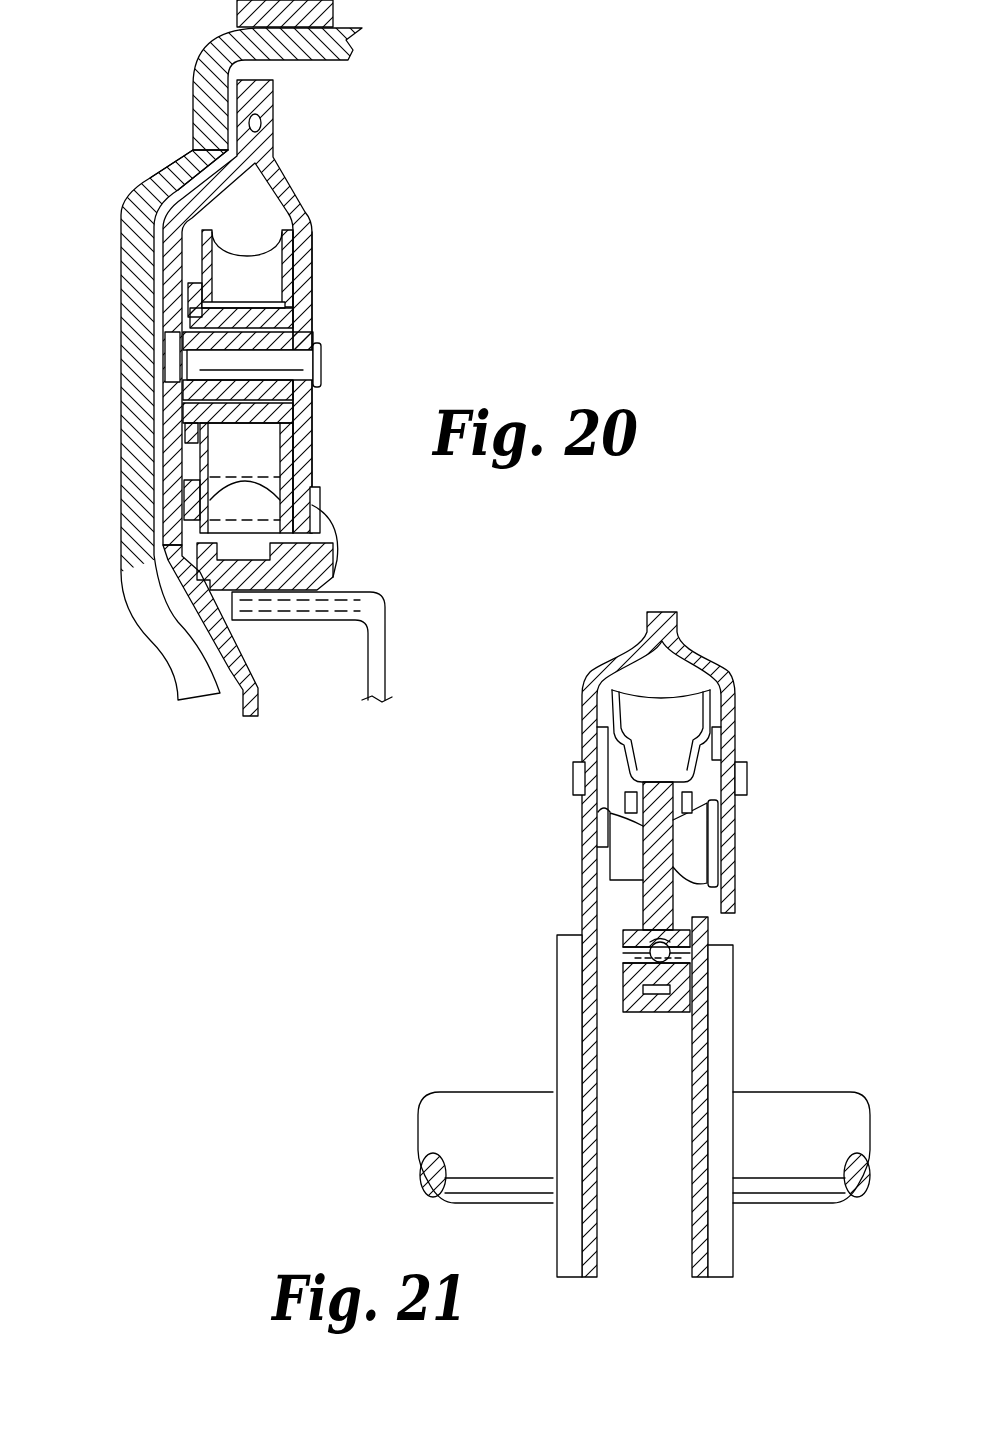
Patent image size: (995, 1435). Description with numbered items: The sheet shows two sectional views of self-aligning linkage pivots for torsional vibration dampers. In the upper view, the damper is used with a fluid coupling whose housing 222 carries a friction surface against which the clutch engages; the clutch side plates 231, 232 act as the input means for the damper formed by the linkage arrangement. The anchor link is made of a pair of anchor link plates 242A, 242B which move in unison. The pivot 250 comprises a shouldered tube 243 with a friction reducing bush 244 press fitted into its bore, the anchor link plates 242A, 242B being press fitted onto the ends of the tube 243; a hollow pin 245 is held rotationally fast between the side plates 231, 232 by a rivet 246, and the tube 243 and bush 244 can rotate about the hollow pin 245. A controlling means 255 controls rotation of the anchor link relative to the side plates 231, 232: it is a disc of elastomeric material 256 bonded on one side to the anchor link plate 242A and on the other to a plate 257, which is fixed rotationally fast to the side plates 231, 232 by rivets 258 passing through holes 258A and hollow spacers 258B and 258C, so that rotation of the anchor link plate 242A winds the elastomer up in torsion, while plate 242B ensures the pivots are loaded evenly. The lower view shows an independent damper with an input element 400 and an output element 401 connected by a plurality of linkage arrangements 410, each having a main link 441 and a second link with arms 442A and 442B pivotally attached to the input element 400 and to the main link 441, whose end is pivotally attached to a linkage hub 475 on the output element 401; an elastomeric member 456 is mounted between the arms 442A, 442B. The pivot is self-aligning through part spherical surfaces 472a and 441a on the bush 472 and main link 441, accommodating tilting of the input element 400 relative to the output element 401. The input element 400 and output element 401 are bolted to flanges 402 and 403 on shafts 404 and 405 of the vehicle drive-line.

In FIG. 20, the housing 222 is at (330, 45).
In FIG. 20, the side plate 231 is at (190, 152).
In FIG. 20, the side plate 232 is at (262, 147).
In FIG. 20, the disc of elastomeric material 256 is at (230, 242).
In FIG. 20, the plate 257 is at (185, 233).
In FIG. 20, the anchor link plate 242A is at (312, 222).
In FIG. 20, the anchor link plate 242B is at (195, 297).
In FIG. 20, the controlling means 255 is at (296, 252).
In FIG. 20, the shouldered tube 243 is at (290, 305).
In FIG. 20, the friction reducing bush 244 is at (272, 320).
In FIG. 20, the pivot 250 is at (166, 322).
In FIG. 20, the hollow pin 245 is at (290, 358).
In FIG. 20, the rivet 246 is at (283, 352).
In FIG. 20, the rivet 258 is at (290, 503).
In FIG. 20, the hole 258A is at (200, 498).
In FIG. 20, the hollow spacer 258B is at (178, 565).
In FIG. 20, the hollow spacer 258C is at (273, 542).
In FIG. 21, the input element 400 is at (590, 860).
In FIG. 21, the arm 442A is at (715, 755).
In FIG. 21, the arm 442B is at (607, 782).
In FIG. 21, the elastomeric member 456 is at (688, 742).
In FIG. 21, the linkage arrangement 410 is at (660, 851).
In FIG. 21, the main link 441 is at (673, 903).
In FIG. 21, the part spherical surface 441a is at (662, 957).
In FIG. 21, the bush 472 is at (662, 945).
In FIG. 21, the part spherical surface 472a is at (645, 920).
In FIG. 21, the linkage hub 475 is at (630, 945).
In FIG. 21, the output element 401 is at (700, 977).
In FIG. 21, the flange 402 is at (570, 1030).
In FIG. 21, the flange 403 is at (715, 1045).
In FIG. 21, the shaft 404 is at (445, 1117).
In FIG. 21, the shaft 405 is at (805, 1118).